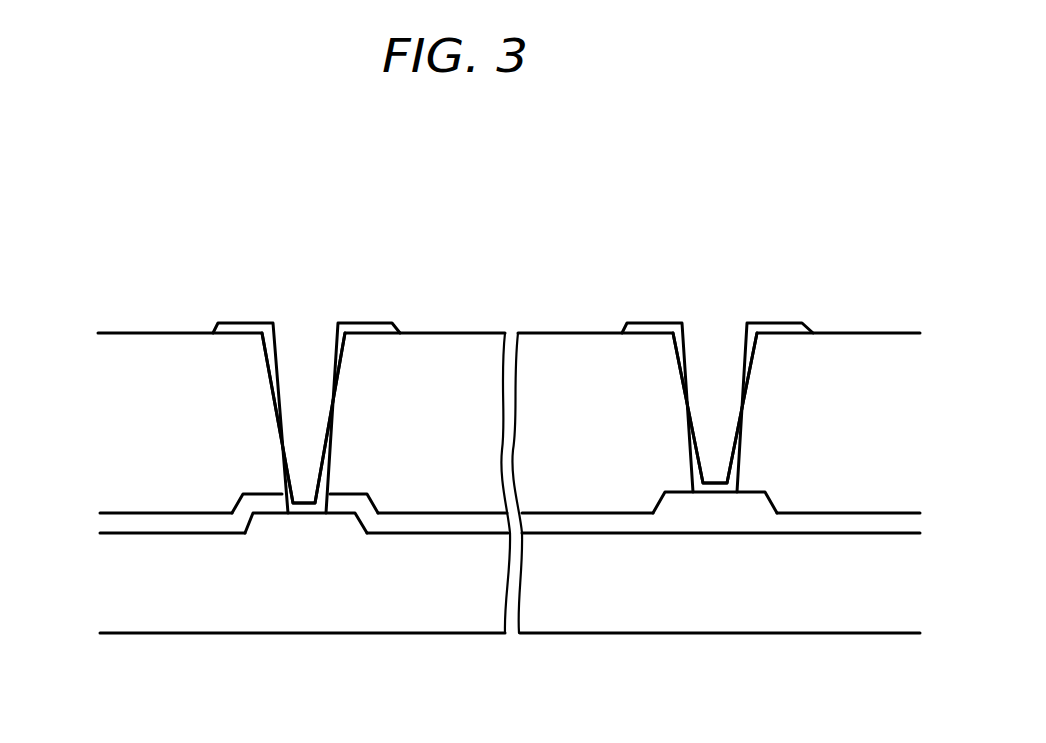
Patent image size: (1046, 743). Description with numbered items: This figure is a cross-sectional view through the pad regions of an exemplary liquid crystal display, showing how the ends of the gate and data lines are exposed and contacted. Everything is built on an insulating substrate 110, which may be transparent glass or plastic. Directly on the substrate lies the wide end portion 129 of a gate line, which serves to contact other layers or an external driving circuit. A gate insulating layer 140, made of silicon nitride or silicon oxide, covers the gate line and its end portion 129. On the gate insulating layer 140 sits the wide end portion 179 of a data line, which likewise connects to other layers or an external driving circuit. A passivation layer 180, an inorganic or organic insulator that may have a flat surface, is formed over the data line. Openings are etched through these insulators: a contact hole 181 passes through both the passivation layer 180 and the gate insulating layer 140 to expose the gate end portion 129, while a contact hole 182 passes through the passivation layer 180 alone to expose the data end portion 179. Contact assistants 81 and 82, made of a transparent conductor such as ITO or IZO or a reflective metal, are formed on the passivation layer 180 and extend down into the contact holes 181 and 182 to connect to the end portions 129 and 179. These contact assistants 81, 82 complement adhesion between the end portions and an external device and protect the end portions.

The insulating substrate 110 is at (852, 610).
The gate insulating layer 140 is at (177, 525).
The end portion of gate line 129 is at (302, 525).
The end portion of data line 179 is at (713, 502).
The passivation layer 180 is at (590, 478).
The contact hole 181 is at (272, 393).
The contact assistant 81 is at (367, 327).
The contact hole 182 is at (683, 397).
The contact assistant 82 is at (778, 327).